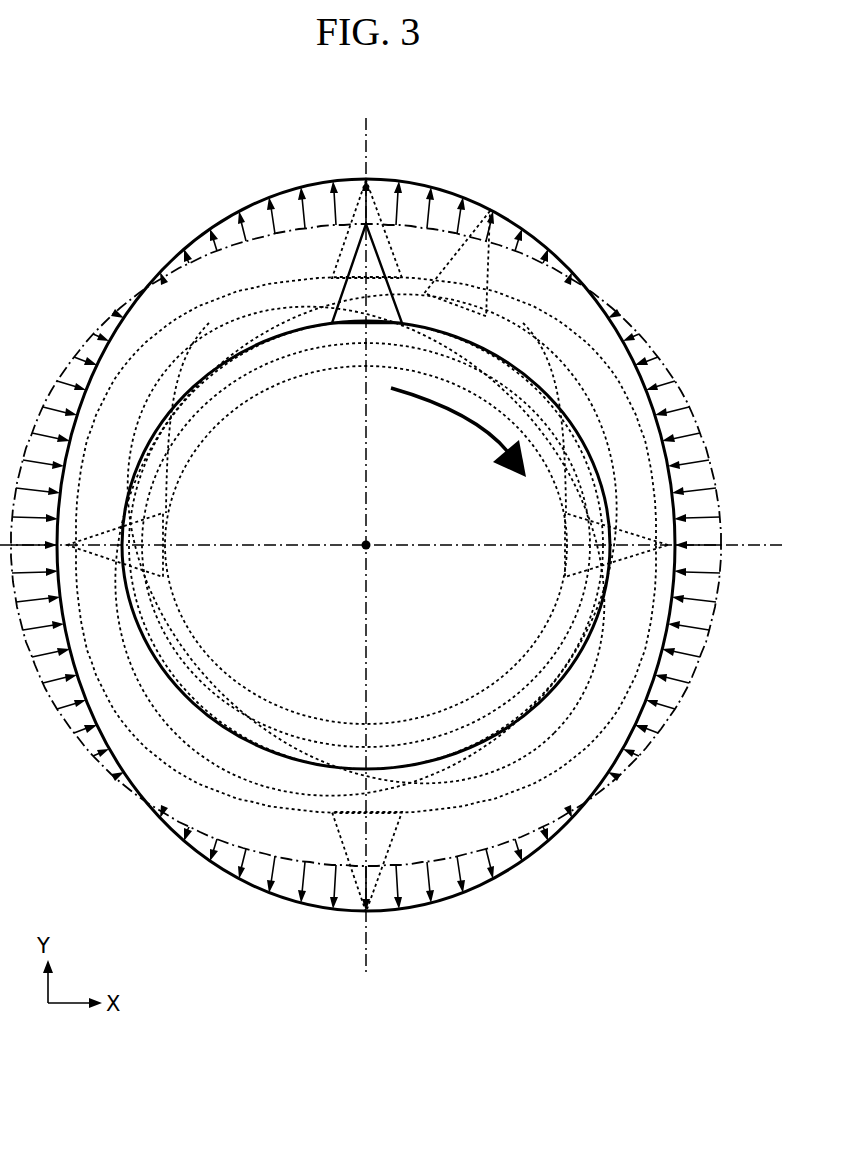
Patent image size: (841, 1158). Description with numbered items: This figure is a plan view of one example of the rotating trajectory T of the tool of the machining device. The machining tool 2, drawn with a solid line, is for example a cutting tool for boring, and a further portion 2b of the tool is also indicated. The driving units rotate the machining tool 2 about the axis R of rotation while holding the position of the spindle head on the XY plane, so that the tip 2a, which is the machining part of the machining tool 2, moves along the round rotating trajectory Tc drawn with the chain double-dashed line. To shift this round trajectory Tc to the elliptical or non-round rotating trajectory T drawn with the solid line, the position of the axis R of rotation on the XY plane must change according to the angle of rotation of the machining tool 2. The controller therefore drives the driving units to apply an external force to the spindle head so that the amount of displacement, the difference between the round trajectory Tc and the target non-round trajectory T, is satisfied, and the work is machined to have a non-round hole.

The machining tool 2 is at (350, 266).
The tip 2a is at (356, 218).
The ring portion 2b is at (516, 367).
The rotating trajectory of the tool T is at (455, 187).
The round rotating trajectory of the tool Tc is at (699, 418).
The axis of rotation R is at (366, 545).